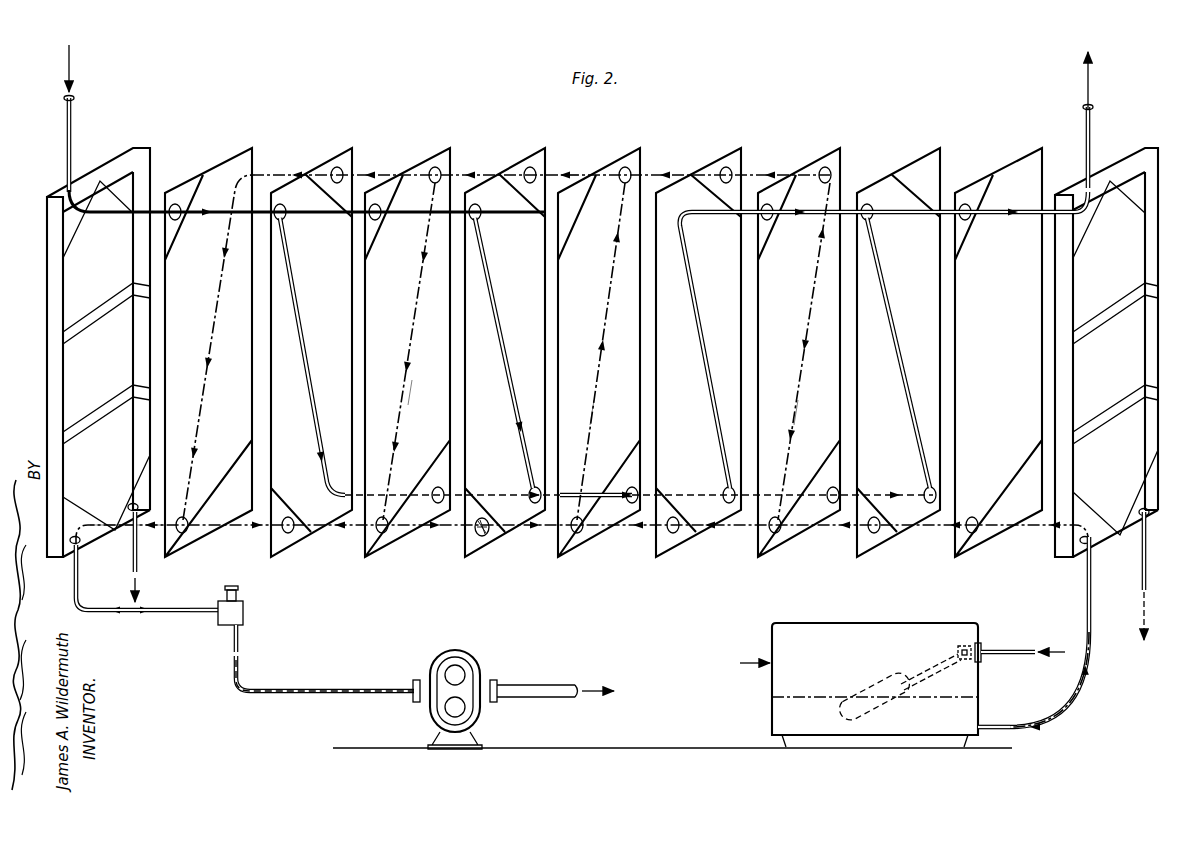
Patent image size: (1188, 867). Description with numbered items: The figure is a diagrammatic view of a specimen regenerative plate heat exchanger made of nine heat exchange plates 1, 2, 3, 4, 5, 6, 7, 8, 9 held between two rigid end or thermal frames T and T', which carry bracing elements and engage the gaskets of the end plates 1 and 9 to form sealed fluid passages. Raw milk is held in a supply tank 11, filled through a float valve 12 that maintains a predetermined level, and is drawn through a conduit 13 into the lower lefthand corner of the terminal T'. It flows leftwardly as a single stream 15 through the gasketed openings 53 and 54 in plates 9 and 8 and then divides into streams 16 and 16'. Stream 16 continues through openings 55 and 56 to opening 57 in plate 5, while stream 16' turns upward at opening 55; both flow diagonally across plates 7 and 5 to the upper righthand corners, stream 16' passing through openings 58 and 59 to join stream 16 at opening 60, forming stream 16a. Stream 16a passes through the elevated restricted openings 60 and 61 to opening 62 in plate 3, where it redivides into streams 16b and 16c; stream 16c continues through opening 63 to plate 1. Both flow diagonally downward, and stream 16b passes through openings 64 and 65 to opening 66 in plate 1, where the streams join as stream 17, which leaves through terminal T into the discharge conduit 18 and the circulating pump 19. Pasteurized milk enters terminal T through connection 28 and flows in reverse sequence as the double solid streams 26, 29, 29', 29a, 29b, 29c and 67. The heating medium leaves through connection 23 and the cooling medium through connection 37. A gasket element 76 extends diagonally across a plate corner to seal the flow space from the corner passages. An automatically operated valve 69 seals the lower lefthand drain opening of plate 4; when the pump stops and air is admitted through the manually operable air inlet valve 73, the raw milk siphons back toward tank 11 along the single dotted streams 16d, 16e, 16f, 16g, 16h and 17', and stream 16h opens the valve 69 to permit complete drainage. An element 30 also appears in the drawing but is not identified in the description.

The end plate 1 is at (208, 346).
The plate 2 is at (311, 353).
The plate 3 is at (407, 352).
The plate 4 is at (505, 358).
The plate 5 is at (599, 351).
The plate 6 is at (702, 348).
The plate 7 is at (809, 345).
The plate 8 is at (896, 364).
The end plate 9 is at (998, 357).
The raw milk supply tank 11 is at (845, 685).
The float valve 12 is at (965, 644).
The conduit 13 is at (1083, 585).
The single stream 15 is at (906, 530).
The stream 16 is at (651, 372).
The stream 16' is at (792, 333).
The stream 16a is at (567, 172).
The stream 16b is at (417, 302).
The stream 16c is at (360, 172).
The reverse flow stream 16d is at (214, 392).
The reverse flow stream 16e is at (407, 390).
The reverse flow stream 16f is at (590, 400).
The reverse flow stream 16g is at (800, 400).
The reverse flow stream 16h is at (547, 530).
The stream 17 is at (162, 551).
The reverse flow stream 17' is at (110, 492).
The discharge conduit 18 is at (82, 556).
The circulating pump 19 is at (470, 658).
The connection 23 is at (132, 570).
The pasteurized milk stream 26 is at (118, 221).
The connection 28 is at (64, 129).
The pasteurized milk stream 29 is at (312, 356).
The pasteurized milk stream 29' is at (504, 353).
The pasteurized milk stream 29a is at (597, 488).
The pasteurized milk stream 29b is at (692, 286).
The pasteurized milk stream 29c is at (890, 270).
The outlet pipe 30 is at (1084, 120).
The connection 37 is at (1140, 567).
The gasketed opening 53 is at (974, 534).
The gasketed opening 54 is at (874, 534).
The opening 55 is at (777, 534).
The gasketed opening 56 is at (672, 534).
The gasketed opening 57 is at (579, 534).
The opening 58 is at (828, 168).
The opening 59 is at (729, 168).
The opening 60 is at (622, 185).
The opening 61 is at (528, 186).
The opening 62 is at (430, 185).
The opening 63 is at (336, 185).
The opening 64 is at (384, 534).
The opening 65 is at (289, 534).
The opening 66 is at (186, 532).
The pasteurized milk stream 67 is at (973, 222).
The automatically operated valve 69 is at (485, 538).
The manually operable air inlet valve 73 is at (245, 613).
The gasket element 76 is at (200, 186).
The thermal frame T is at (98, 341).
The thermal frame T' is at (1106, 342).